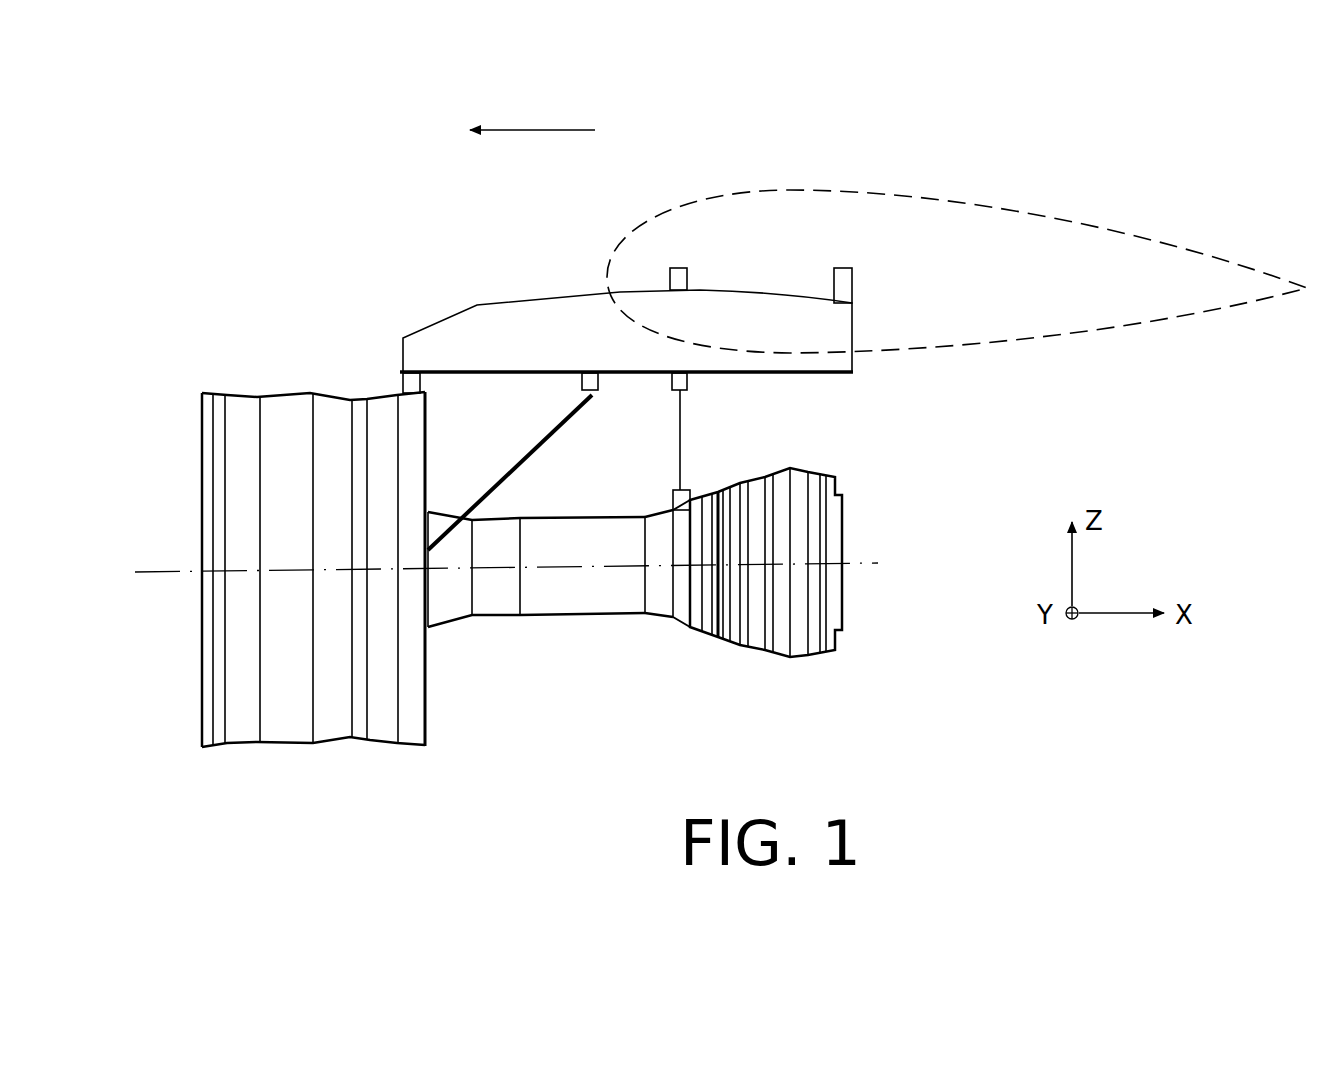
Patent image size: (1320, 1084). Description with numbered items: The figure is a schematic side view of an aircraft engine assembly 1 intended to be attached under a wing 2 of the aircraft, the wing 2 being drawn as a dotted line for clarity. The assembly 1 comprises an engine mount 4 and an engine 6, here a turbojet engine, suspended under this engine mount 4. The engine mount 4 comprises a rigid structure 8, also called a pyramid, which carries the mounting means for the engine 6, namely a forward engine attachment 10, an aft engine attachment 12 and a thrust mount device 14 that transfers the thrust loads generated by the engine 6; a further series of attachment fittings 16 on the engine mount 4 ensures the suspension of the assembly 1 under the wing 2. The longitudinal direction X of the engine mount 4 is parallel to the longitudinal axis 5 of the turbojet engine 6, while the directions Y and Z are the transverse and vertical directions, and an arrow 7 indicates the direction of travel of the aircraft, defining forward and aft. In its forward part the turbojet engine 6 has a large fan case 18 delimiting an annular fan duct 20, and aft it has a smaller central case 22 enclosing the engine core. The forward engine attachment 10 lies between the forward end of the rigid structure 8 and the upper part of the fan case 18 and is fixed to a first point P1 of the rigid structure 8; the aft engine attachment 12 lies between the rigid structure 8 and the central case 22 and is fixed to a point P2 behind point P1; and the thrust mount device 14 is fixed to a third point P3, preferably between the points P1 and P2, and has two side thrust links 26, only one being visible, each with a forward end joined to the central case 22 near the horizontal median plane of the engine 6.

The aircraft engine assembly 1 is at (256, 243).
The wing 2 is at (1056, 223).
The engine mount 4 is at (297, 303).
The longitudinal axis 5 is at (152, 572).
The engine 6 is at (410, 750).
The arrow 7 is at (530, 130).
The rigid structure 8 is at (845, 380).
The forward engine attachment 10 is at (398, 385).
The aft engine attachment 12 is at (686, 402).
The thrust mount device 14 is at (600, 403).
The attachment fittings 16 is at (838, 265).
The fan case 18 is at (255, 728).
The annular fan duct 20 is at (388, 448).
The central case 22 is at (515, 605).
The side thrust links 26 is at (548, 455).
The first point P1 is at (401, 370).
The second point P2 is at (677, 369).
The third point P3 is at (588, 372).